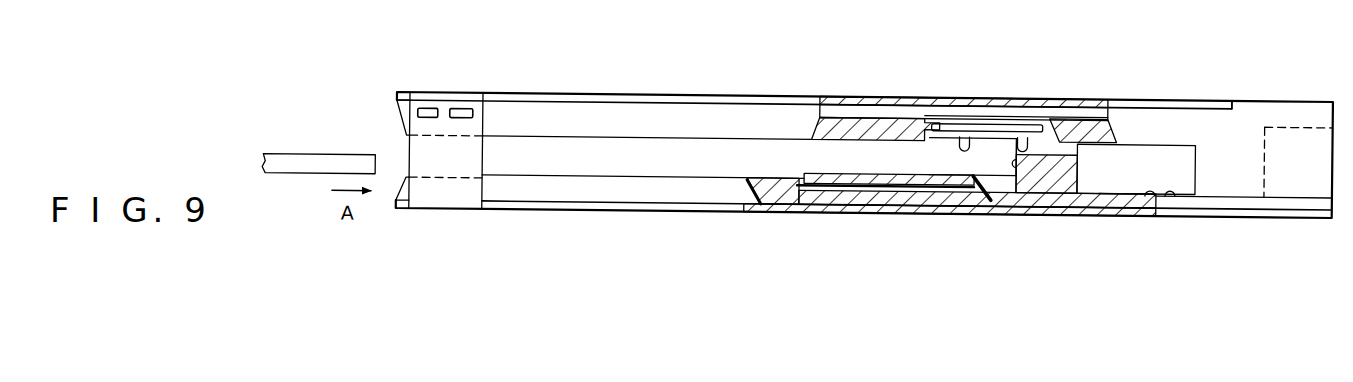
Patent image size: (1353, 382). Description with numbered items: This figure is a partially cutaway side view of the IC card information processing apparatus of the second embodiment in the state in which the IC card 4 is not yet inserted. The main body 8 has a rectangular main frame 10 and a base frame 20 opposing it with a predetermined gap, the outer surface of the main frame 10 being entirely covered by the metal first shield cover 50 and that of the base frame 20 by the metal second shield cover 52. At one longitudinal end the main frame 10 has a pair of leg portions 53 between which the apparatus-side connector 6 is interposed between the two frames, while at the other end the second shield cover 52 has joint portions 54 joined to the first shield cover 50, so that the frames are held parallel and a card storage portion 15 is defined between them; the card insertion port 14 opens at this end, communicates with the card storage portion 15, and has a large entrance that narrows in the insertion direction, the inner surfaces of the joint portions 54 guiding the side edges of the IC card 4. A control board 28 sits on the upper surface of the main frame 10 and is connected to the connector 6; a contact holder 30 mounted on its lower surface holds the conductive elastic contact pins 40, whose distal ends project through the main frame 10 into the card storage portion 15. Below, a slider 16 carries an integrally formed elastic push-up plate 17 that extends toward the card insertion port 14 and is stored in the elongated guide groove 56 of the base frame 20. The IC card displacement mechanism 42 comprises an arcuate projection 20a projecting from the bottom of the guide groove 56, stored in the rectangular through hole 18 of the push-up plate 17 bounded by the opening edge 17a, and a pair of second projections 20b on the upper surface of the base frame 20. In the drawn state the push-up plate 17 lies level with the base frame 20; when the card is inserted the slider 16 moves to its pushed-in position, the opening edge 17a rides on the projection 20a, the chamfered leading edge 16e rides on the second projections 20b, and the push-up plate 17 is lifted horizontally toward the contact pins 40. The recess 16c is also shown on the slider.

The IC card 4 is at (292, 154).
The apparatus-side connector 6 is at (1298, 176).
The main body 8 is at (1287, 92).
The main frame 10 is at (603, 111).
The card insertion port 14 is at (397, 148).
The card storage portion 15 is at (611, 161).
The slider 16 is at (1058, 190).
The block recess 16c is at (1078, 161).
The leading edge 16e is at (1072, 195).
The push-up plate 17 is at (835, 192).
The opening edge 17a is at (896, 182).
The through hole 18 is at (946, 184).
The base frame 20 is at (691, 187).
The projection 20a is at (993, 206).
The second projections 20b is at (1170, 183).
The control board 28 is at (855, 96).
The contact holder 30 is at (940, 110).
The contact pins 40 is at (1023, 131).
The IC card displacement mechanism 42 is at (1004, 200).
The first shield cover 50 is at (728, 90).
The second shield cover 52 is at (1115, 200).
The leg portions 53 is at (1238, 188).
The joint portions 54 is at (473, 181).
The guide groove 56 is at (1155, 192).